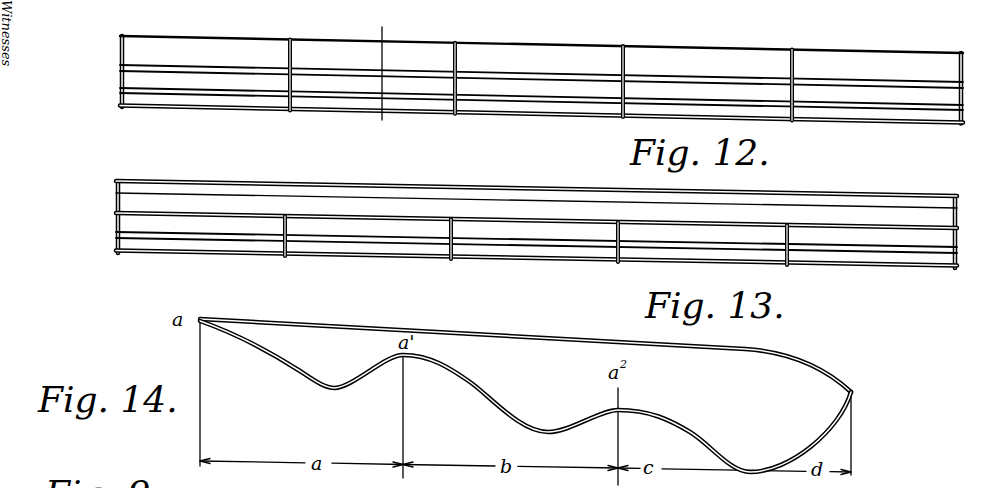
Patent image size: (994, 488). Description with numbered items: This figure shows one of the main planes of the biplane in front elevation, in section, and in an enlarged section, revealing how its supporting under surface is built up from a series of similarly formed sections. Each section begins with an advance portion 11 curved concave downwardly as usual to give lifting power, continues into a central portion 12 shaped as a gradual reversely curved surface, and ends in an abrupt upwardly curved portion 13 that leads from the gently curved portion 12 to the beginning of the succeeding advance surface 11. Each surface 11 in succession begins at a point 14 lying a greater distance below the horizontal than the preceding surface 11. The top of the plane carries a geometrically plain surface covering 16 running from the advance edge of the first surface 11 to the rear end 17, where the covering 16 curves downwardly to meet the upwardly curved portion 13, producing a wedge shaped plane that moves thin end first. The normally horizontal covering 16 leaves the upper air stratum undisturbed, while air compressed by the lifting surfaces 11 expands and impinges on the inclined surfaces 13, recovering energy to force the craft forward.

In FIG. 14, the advance portion 11 is at (262, 346).
In FIG. 12, the central portion 12 is at (508, 75).
In FIG. 13, the central portion 12 is at (492, 245).
In FIG. 14, the central portion 12 is at (327, 386).
In FIG. 14, the upwardly curved portion 13 is at (378, 366).
In FIG. 12, the starting point of surface 14 is at (391, 78).
In FIG. 13, the starting point of surface 14 is at (593, 223).
In FIG. 14, the starting point of surface 14 is at (403, 359).
In FIG. 12, the plain surface covering 16 is at (519, 44).
In FIG. 13, the plain surface covering 16 is at (496, 187).
In FIG. 14, the plain surface covering 16 is at (334, 323).
In FIG. 14, the rear end 17 is at (830, 371).